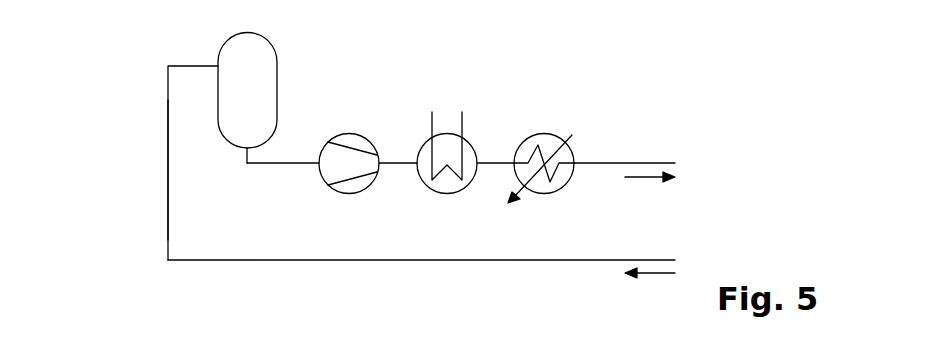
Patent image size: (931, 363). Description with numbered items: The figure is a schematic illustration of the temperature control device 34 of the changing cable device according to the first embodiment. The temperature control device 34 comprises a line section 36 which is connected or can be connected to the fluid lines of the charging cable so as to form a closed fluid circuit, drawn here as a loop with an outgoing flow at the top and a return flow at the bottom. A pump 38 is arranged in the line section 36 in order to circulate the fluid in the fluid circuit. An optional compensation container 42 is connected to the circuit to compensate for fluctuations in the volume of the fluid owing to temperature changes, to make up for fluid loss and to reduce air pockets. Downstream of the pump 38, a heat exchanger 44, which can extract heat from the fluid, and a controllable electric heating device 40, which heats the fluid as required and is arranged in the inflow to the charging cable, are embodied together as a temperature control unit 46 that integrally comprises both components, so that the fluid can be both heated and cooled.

The temperature control device 34 is at (140, 78).
The line section 36 is at (168, 206).
The pump 38 is at (347, 133).
The heating device 40 is at (543, 130).
The compensation container 42 is at (274, 50).
The heat exchanger 44 is at (442, 130).
The temperature control unit 46 is at (575, 67).